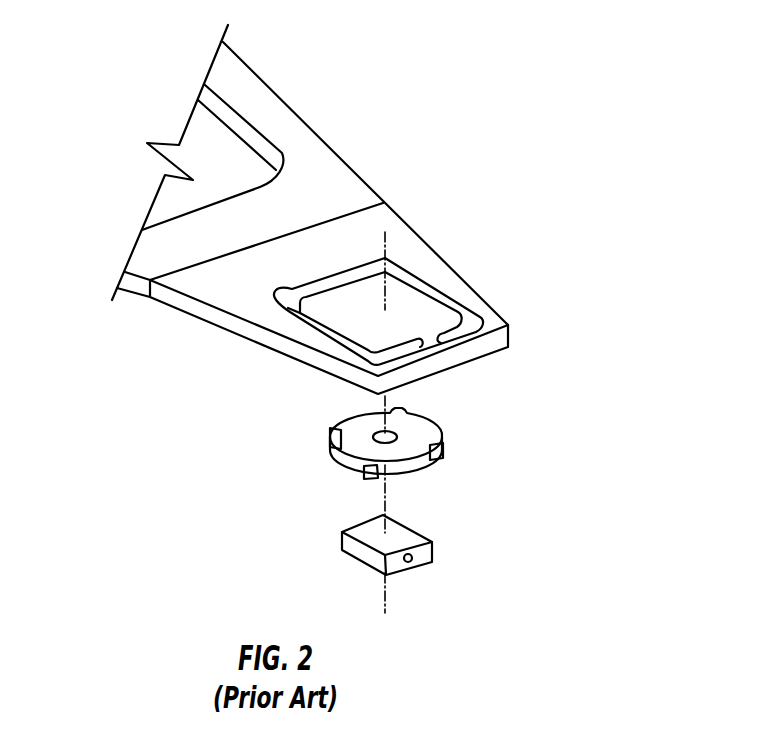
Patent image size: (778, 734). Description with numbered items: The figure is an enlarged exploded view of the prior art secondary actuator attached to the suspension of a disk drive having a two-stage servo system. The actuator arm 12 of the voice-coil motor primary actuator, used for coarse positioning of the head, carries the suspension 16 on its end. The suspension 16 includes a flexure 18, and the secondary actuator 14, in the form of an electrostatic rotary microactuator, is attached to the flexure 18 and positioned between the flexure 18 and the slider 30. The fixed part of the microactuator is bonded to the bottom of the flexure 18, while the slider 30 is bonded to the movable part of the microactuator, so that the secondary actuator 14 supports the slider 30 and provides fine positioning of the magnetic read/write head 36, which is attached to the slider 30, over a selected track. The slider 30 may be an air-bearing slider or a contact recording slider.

The actuator arm 12 is at (268, 100).
The secondary actuator 14 is at (413, 436).
The suspension 16 is at (407, 238).
The flexure 18 is at (418, 310).
The slider 30 is at (360, 553).
The magnetic read/write head 36 is at (418, 560).